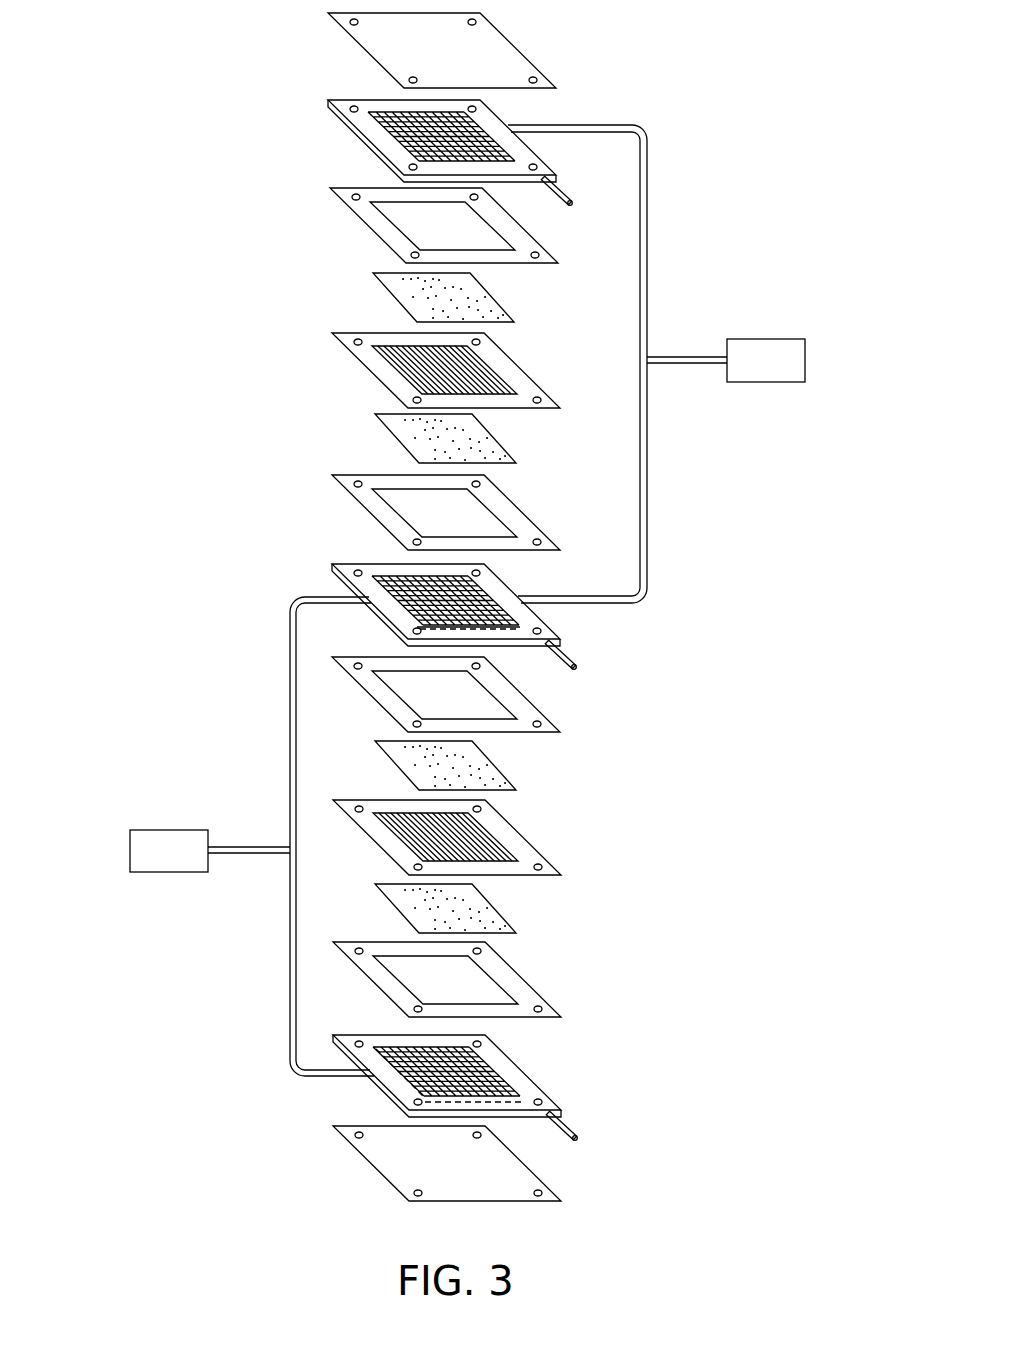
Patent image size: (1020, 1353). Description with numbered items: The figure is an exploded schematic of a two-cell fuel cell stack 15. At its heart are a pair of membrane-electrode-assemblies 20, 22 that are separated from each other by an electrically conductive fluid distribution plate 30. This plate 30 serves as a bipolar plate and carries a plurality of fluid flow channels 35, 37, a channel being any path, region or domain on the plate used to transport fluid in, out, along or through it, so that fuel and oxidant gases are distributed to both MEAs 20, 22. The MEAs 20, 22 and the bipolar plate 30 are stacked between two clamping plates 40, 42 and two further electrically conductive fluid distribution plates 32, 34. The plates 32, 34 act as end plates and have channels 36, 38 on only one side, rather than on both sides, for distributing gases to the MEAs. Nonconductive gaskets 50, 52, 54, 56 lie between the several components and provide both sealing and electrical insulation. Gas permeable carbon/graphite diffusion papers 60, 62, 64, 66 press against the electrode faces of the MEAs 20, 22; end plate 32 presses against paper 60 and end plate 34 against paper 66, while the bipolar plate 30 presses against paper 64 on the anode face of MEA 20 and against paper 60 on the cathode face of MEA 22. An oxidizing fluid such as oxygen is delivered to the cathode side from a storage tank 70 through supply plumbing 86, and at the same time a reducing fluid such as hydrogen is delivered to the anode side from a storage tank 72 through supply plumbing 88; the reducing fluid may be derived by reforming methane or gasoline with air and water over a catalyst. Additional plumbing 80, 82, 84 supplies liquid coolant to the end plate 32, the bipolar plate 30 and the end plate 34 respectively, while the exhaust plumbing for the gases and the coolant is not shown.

The fuel cell stack 15 is at (126, 112).
The membrane-electrode-assembly 20 is at (340, 337).
The membrane-electrode-assembly 22 is at (543, 851).
The electrically conductive fluid distribution plate 30 is at (334, 566).
The electrically conductive fluid distribution plate 32 is at (330, 102).
The electrically conductive fluid distribution plate 34 is at (513, 1058).
The fluid flow channel 35 is at (483, 593).
The channel 36 is at (385, 122).
The fluid flow channel 37 is at (405, 618).
The channel 38 is at (517, 1089).
The clamping plate 40 is at (370, 53).
The clamping plate 42 is at (563, 1201).
The nonconductive gasket 50 is at (336, 195).
The nonconductive gasket 52 is at (340, 479).
The nonconductive gasket 54 is at (552, 719).
The nonconductive gasket 56 is at (543, 994).
The gas permeable carbon/graphite diffusion paper 60 is at (378, 275).
The gas permeable carbon/graphite diffusion paper 62 is at (380, 417).
The gas permeable carbon/graphite diffusion paper 64 is at (510, 778).
The gas permeable carbon/graphite diffusion paper 66 is at (510, 918).
The storage tank 70 is at (783, 339).
The storage tank 72 is at (143, 830).
The plumbing 80 is at (572, 200).
The plumbing 82 is at (573, 667).
The plumbing 84 is at (578, 1137).
The supply plumbing 86 is at (650, 511).
The supply plumbing 88 is at (290, 1008).